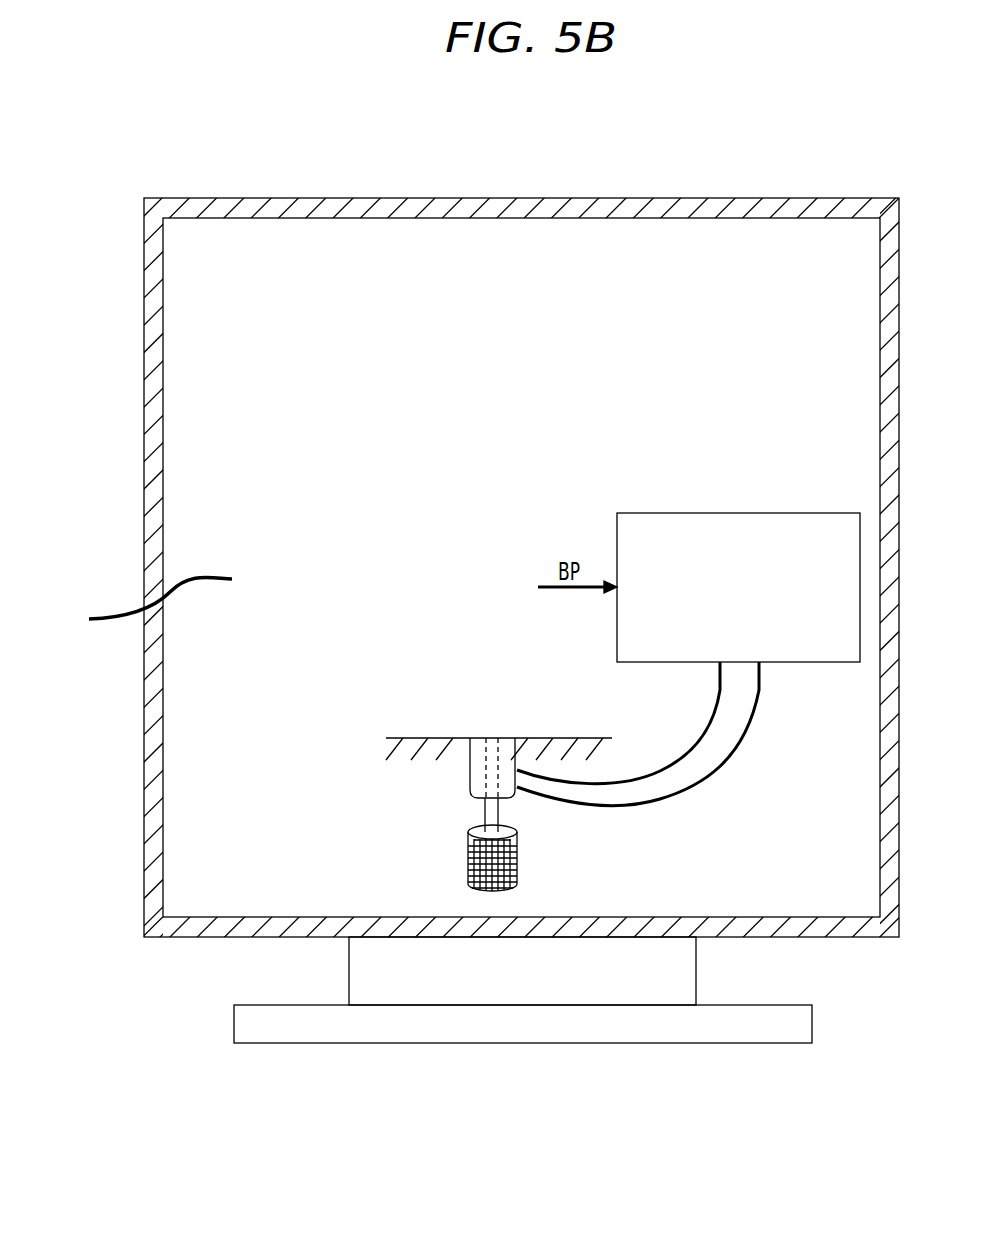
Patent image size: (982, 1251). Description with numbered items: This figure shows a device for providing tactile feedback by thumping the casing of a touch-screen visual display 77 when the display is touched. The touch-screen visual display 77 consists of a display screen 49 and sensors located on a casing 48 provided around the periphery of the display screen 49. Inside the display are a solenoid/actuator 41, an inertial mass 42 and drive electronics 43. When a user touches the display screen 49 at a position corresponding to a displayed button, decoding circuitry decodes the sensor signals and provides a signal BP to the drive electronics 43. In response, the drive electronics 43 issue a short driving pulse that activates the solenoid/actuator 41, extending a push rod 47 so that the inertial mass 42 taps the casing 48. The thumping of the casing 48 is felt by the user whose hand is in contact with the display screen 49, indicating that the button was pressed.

The solenoid/actuator 41 is at (470, 770).
The inertial mass 42 is at (468, 872).
The drive electronics 43 is at (851, 650).
The push rod 47 is at (485, 814).
The casing 48 is at (217, 928).
The display screen 49 is at (145, 603).
The touch-screen visual display 77 is at (142, 728).